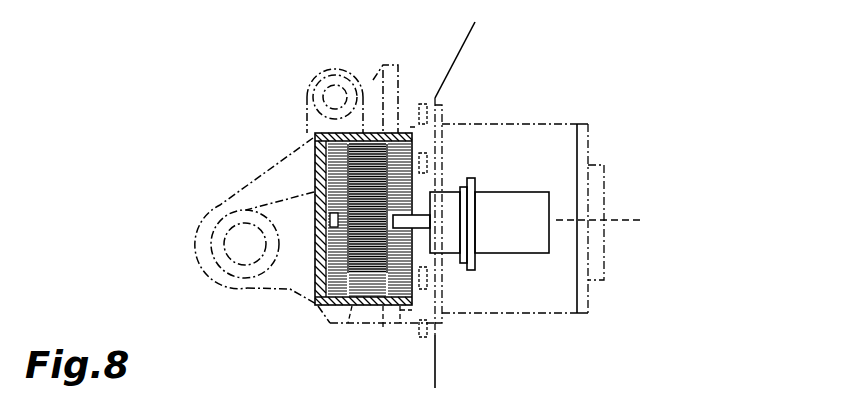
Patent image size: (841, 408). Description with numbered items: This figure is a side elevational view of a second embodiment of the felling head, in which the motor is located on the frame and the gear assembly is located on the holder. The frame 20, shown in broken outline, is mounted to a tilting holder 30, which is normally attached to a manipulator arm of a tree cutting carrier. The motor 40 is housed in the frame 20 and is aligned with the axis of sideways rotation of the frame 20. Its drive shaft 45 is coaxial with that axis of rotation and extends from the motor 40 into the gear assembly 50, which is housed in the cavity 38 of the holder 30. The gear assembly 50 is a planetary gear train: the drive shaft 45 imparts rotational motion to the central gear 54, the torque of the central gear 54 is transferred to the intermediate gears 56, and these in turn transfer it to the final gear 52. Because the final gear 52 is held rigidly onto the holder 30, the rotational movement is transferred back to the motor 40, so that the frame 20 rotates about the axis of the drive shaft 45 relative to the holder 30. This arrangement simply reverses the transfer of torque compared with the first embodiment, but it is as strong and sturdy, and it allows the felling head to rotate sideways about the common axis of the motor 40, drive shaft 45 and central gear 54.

The frame 20 is at (458, 51).
The tilting holder 30 is at (278, 163).
The cavity 38 is at (290, 292).
The motor 40 is at (516, 235).
The drive shaft 45 is at (417, 229).
The gear assembly 50 is at (319, 305).
The final gear 52 is at (350, 307).
The central gear 54 is at (343, 193).
The intermediate gears 56 is at (367, 165).